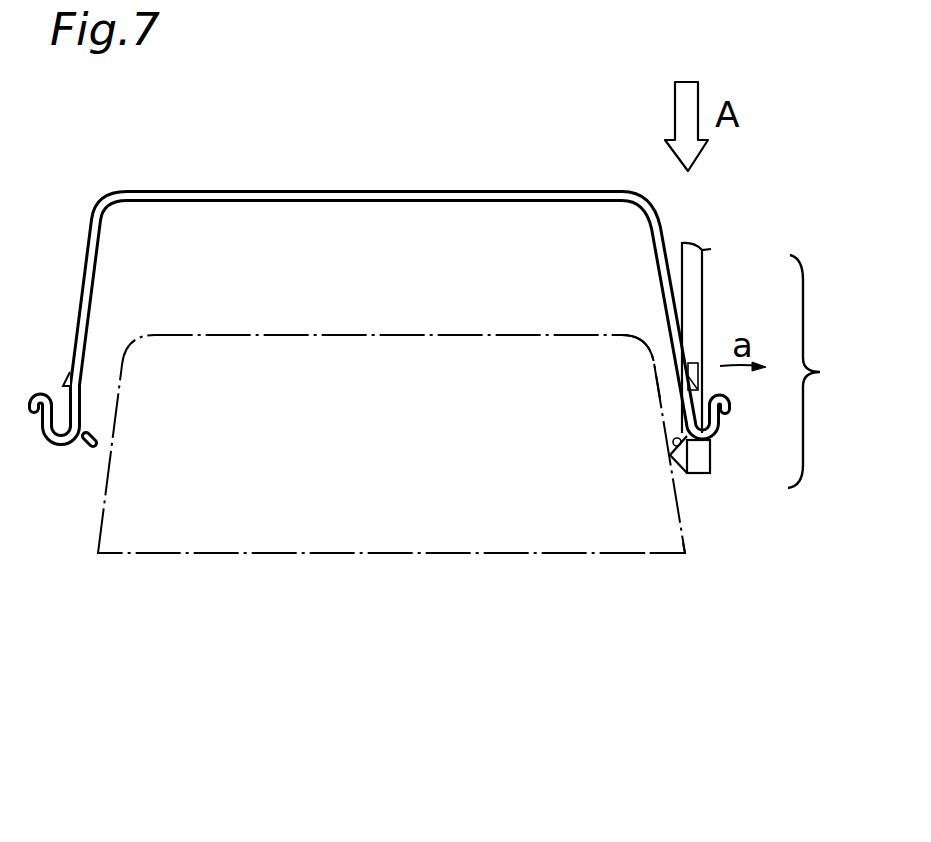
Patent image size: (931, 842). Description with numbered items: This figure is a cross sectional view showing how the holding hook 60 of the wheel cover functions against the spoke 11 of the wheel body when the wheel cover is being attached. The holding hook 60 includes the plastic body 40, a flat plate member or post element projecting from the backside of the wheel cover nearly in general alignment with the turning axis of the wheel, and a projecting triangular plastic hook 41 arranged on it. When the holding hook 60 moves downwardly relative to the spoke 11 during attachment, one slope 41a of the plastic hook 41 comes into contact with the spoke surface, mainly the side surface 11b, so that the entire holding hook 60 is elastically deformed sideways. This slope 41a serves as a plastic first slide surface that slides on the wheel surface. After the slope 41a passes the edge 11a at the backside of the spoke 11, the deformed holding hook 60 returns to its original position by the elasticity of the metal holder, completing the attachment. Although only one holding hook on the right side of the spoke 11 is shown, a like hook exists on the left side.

The spoke 11 is at (213, 515).
The edge 11a is at (672, 541).
The side wall of case 11b is at (657, 395).
The plastic body 40 is at (697, 284).
The plastic hook 41 is at (672, 455).
The slope 41a is at (673, 459).
The holding hook 60 is at (834, 371).